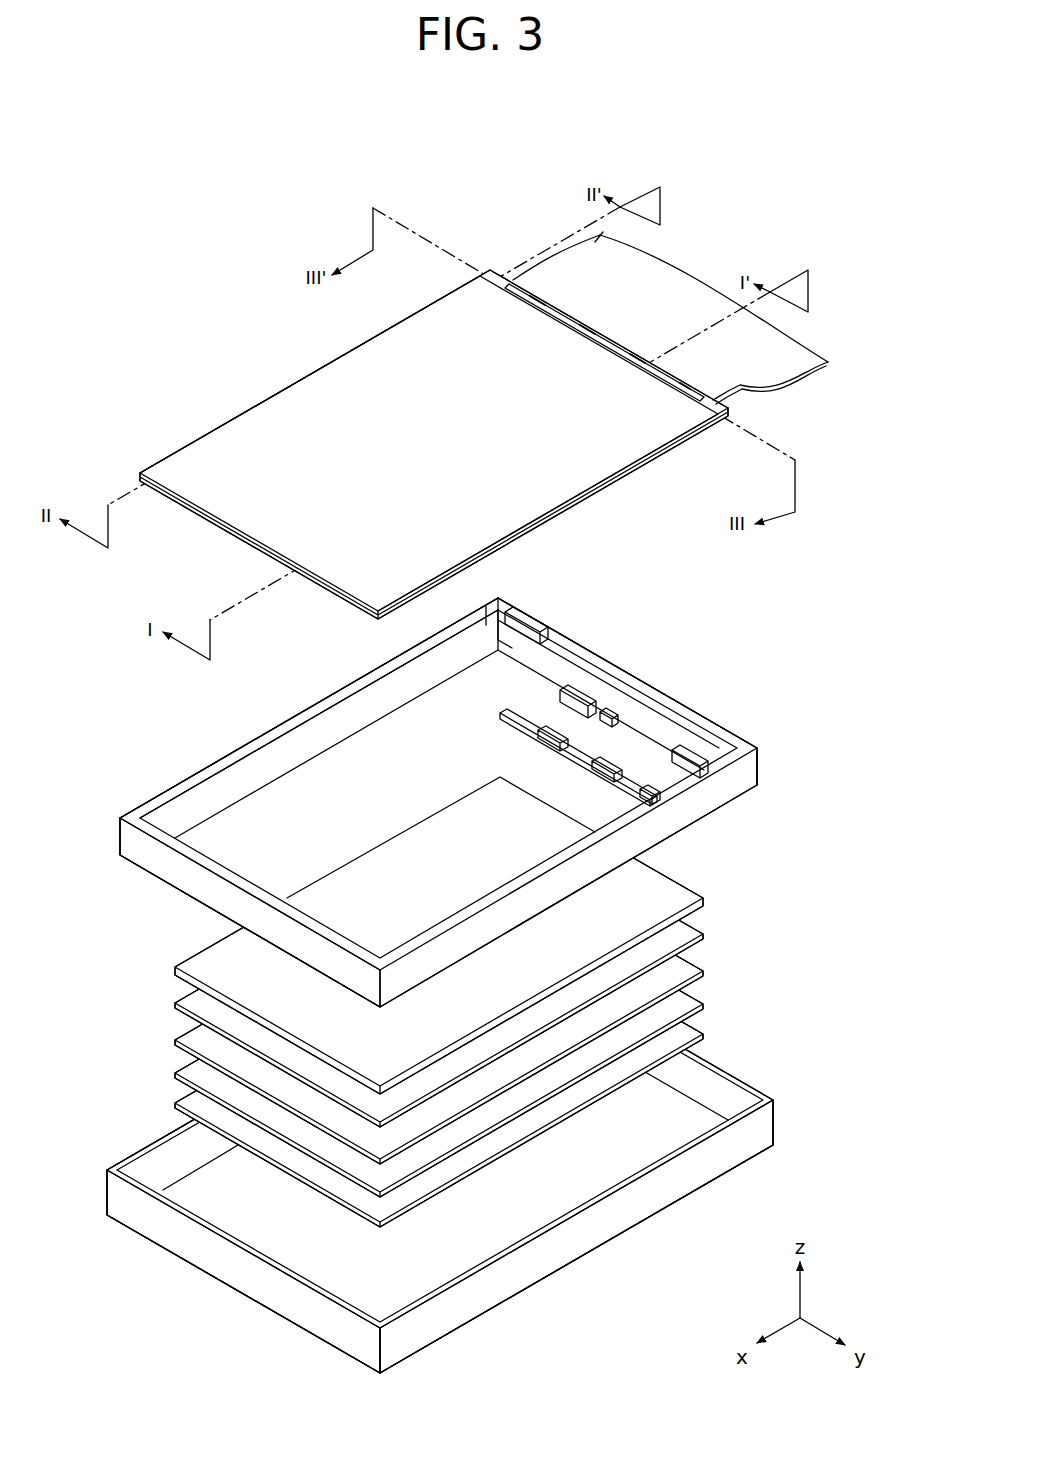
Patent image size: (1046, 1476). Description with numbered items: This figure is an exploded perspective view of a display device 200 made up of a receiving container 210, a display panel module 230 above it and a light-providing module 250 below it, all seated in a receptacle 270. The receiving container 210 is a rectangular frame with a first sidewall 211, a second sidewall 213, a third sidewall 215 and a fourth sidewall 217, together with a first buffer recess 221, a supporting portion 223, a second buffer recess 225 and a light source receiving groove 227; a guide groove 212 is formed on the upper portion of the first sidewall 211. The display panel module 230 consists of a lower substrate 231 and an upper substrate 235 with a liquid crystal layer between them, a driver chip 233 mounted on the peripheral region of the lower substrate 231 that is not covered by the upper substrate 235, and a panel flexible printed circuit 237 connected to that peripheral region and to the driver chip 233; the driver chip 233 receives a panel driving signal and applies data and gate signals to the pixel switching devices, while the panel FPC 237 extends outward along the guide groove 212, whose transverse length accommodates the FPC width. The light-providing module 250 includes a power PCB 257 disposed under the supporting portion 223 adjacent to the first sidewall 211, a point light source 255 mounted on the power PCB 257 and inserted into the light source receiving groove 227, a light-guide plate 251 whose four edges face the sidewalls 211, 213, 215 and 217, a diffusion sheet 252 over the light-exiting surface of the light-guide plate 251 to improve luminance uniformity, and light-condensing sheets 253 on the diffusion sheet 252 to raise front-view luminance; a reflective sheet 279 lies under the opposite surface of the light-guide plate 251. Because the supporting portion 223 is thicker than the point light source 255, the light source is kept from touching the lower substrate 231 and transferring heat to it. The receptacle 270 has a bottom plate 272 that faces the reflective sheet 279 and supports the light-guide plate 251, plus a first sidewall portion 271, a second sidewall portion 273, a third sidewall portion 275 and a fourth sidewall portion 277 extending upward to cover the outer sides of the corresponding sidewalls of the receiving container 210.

The display device 200 is at (416, 120).
The receiving container 210 is at (489, 778).
The first sidewall 211 is at (743, 735).
The guide groove 212 is at (655, 705).
The second sidewall 213 is at (308, 708).
The third sidewall 215 is at (537, 903).
The fourth sidewall 217 is at (212, 893).
The first buffer recess 221 is at (500, 600).
The supporting portion 223 is at (583, 690).
The second buffer recess 225 is at (520, 632).
The light source receiving groove 227 is at (604, 715).
The display panel module 230 is at (468, 419).
The lower substrate 231 is at (250, 553).
The driver chip 233 is at (578, 333).
The upper substrate 235 is at (226, 528).
The panel flexible printed circuit 237 is at (677, 296).
The light-providing module 250 is at (512, 1003).
The light-guide plate 251 is at (700, 975).
The diffusion sheet 252 is at (700, 938).
The light-condensing sheets 253 is at (795, 1052).
The point light source 255 is at (640, 795).
The power printed circuit board 257 is at (635, 810).
The receptacle 270 is at (489, 1157).
The first sidewall portion 271 is at (722, 1087).
The bottom plate 272 is at (596, 1170).
The second sidewall portion 273 is at (160, 1140).
The third sidewall portion 275 is at (565, 1243).
The fourth sidewall portion 277 is at (227, 1262).
The reflective sheet 279 is at (703, 1008).